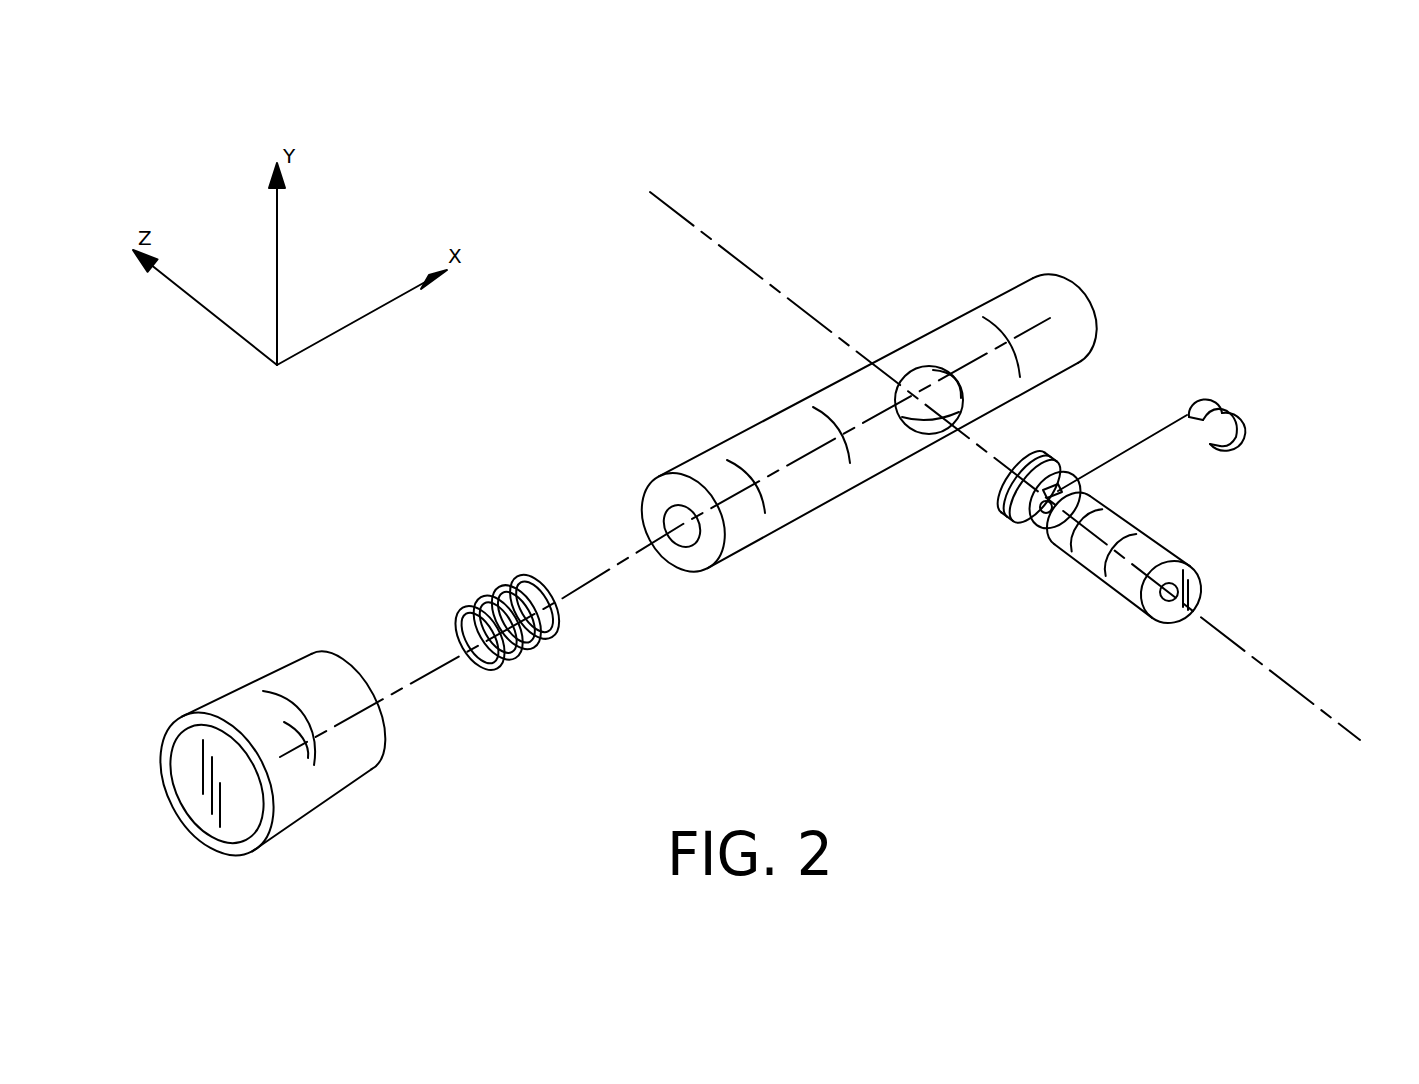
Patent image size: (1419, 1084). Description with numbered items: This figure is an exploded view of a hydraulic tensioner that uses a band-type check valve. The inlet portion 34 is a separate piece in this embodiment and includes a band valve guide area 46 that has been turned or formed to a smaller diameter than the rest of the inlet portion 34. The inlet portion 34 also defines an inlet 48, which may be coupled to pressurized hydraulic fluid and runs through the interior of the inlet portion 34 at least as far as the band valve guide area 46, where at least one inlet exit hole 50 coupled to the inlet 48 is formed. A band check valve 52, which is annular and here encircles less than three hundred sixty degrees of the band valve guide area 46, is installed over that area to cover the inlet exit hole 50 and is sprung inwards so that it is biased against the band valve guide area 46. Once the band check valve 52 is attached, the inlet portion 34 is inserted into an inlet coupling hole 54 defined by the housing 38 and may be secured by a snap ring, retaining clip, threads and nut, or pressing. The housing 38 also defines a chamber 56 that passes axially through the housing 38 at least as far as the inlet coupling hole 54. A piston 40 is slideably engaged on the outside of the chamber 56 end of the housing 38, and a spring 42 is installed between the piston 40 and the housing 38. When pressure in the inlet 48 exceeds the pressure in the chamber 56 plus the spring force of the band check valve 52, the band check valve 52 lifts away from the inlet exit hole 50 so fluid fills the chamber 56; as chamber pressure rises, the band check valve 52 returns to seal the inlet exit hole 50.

The inlet portion 34 is at (1140, 542).
The housing 38 is at (1031, 279).
The piston 40 is at (243, 704).
The spring 42 is at (468, 609).
The band valve guide area 46 is at (1047, 490).
The inlet 48 is at (1168, 602).
The inlet exit hole 50 is at (1043, 515).
The band check valve 52 is at (1233, 444).
The inlet coupling hole 54 is at (928, 406).
The chamber 56 is at (666, 526).